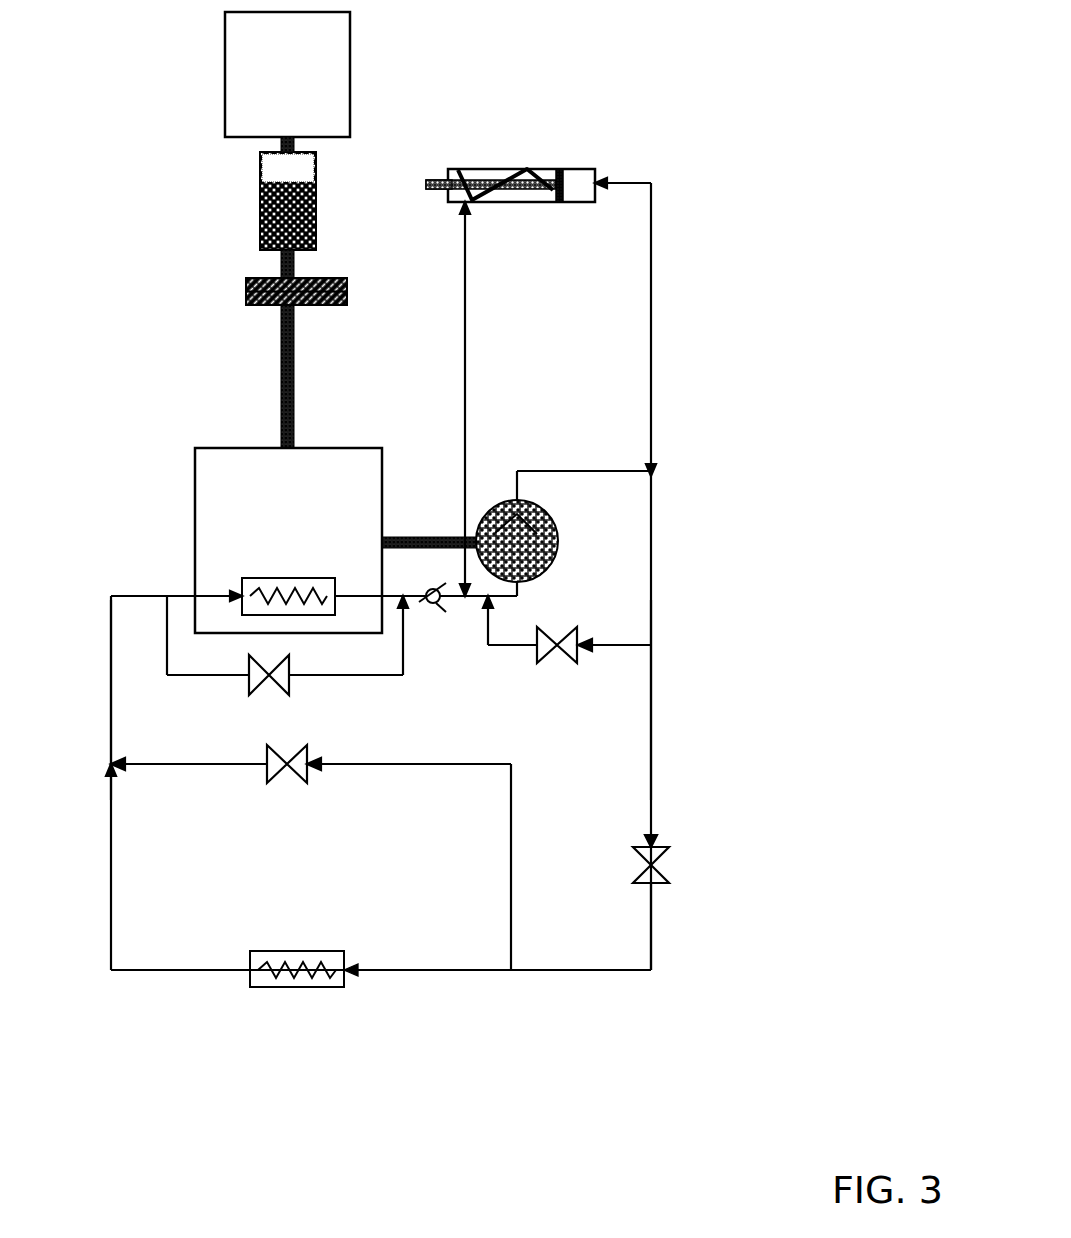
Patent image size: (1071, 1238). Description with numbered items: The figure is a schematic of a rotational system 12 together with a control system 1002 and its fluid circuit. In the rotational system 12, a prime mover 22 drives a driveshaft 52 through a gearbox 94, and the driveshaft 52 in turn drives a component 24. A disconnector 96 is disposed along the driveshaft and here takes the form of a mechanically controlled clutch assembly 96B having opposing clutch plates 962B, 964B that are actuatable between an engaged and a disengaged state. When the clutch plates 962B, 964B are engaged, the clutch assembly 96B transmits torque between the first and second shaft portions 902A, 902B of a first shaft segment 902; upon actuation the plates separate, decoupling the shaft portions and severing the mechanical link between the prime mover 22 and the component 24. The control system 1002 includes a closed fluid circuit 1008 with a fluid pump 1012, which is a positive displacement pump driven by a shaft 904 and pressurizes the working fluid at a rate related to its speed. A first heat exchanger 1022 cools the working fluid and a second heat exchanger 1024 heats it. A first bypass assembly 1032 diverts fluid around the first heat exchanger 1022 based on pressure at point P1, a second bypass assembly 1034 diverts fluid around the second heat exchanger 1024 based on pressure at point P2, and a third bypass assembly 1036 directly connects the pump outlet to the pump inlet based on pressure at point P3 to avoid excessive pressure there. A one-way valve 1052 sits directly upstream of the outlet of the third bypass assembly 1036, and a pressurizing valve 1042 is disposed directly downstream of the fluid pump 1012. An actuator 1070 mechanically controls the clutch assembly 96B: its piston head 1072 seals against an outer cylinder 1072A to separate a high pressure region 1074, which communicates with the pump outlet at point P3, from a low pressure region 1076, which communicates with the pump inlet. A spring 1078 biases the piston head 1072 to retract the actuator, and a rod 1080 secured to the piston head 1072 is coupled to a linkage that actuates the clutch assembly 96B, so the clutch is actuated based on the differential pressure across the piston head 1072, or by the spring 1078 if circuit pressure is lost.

The rotational system 12 is at (838, 79).
The prime mover 22 is at (300, 92).
The component 24 is at (300, 554).
The driveshaft 52 is at (281, 327).
The gearbox 94 is at (300, 181).
The disconnector 96 is at (188, 308).
The clutch assembly 96B is at (205, 318).
The clutch plate 962B is at (205, 318).
The clutch plate 964B is at (246, 288).
The first shaft segment 902 is at (262, 342).
The first shaft portion 902A is at (280, 265).
The second shaft portion 902B is at (262, 426).
The shaft 904 is at (277, 426).
The control system 1002 is at (838, 346).
The closed fluid circuit 1008 is at (651, 932).
The fluid pump 1012 is at (535, 505).
The first heat exchanger 1022 is at (316, 990).
The second heat exchanger 1024 is at (242, 580).
The first bypass assembly 1032 is at (365, 768).
The second bypass assembly 1034 is at (292, 688).
The third bypass assembly 1036 is at (565, 658).
The pressurizing valve 1042 is at (668, 848).
The one-way valve 1052 is at (440, 608).
The actuator 1070 is at (559, 181).
The piston head 1072 is at (537, 180).
The outer cylinder 1072A is at (530, 202).
The high pressure region 1074 is at (578, 188).
The low pressure region 1076 is at (498, 172).
The spring 1078 is at (475, 172).
The rod 1080 is at (426, 188).
The point P1 is at (533, 972).
The point P2 is at (110, 615).
The point P3 is at (651, 630).